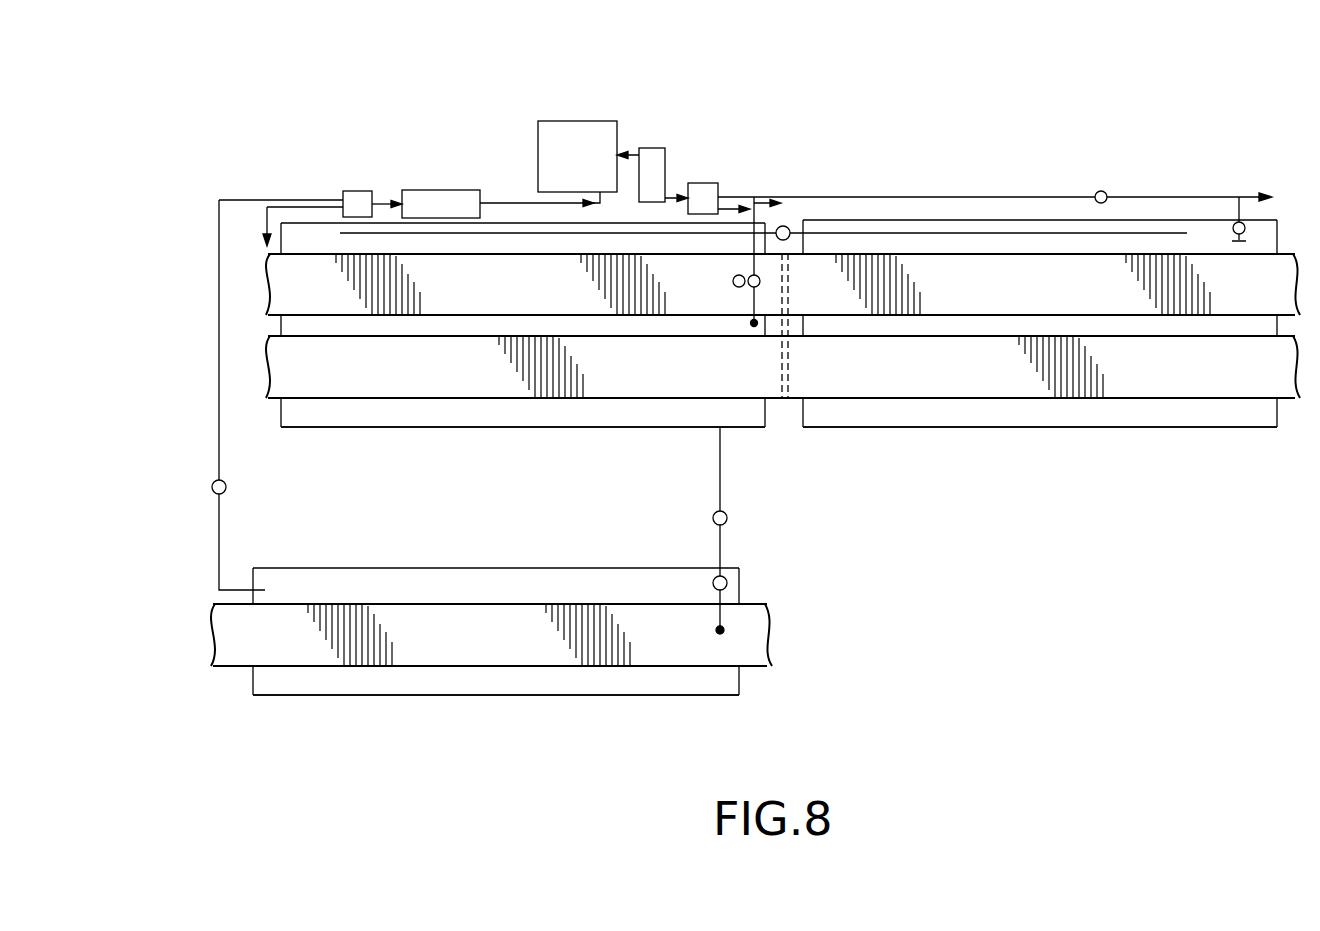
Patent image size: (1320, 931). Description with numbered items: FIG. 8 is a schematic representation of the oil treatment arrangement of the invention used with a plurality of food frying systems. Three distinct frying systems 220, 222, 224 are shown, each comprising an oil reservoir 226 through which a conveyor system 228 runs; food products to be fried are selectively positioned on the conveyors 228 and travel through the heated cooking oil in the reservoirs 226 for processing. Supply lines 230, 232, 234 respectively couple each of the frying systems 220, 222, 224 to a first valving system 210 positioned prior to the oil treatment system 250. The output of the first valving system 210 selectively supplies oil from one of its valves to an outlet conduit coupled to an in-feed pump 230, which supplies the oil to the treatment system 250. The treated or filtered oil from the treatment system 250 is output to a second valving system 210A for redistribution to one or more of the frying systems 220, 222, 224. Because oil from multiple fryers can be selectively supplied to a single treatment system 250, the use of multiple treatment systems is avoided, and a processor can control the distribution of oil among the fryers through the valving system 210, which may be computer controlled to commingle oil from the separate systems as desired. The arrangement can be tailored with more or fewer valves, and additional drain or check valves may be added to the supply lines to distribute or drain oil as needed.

The first valving system 210 is at (357, 191).
The second valving system 210A is at (703, 183).
The frying system 220 is at (563, 445).
The frying system 222 is at (1117, 442).
The frying system 224 is at (517, 712).
The oil reservoir 226 is at (388, 428).
The conveyor system 228 is at (729, 400).
The supply line 230 is at (449, 190).
The supply line 232 is at (1041, 218).
The supply line 234 is at (206, 516).
The oil treatment system 250 is at (580, 121).